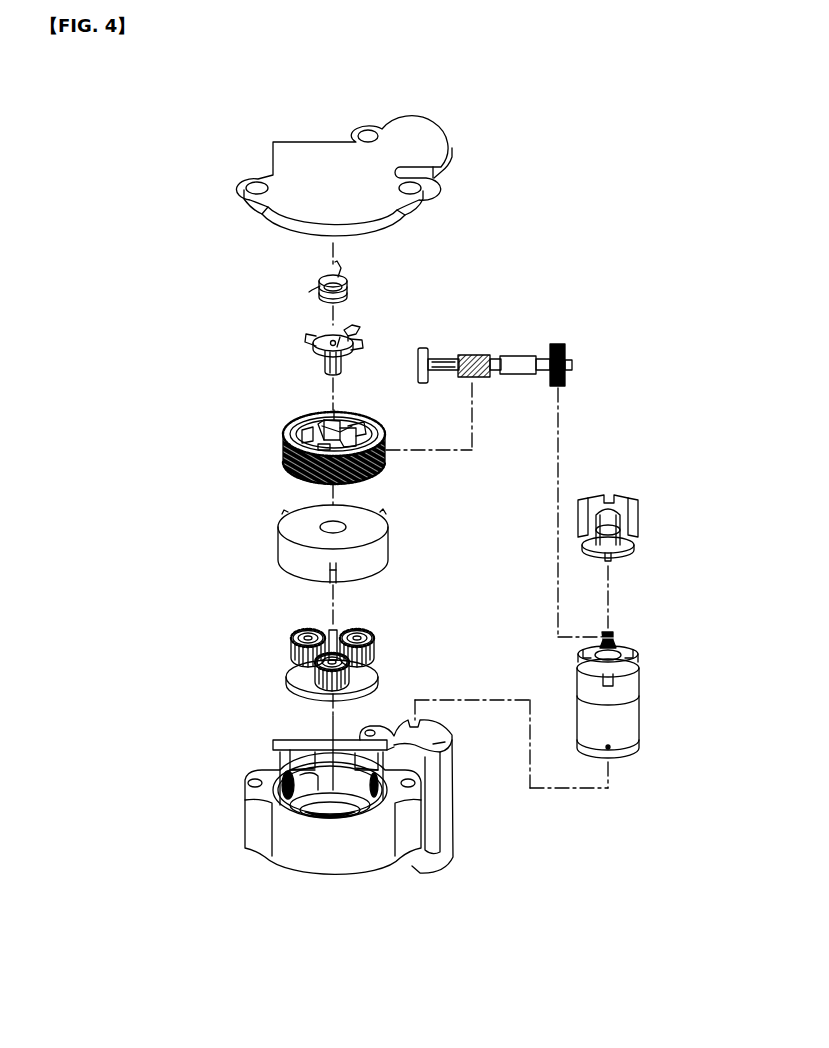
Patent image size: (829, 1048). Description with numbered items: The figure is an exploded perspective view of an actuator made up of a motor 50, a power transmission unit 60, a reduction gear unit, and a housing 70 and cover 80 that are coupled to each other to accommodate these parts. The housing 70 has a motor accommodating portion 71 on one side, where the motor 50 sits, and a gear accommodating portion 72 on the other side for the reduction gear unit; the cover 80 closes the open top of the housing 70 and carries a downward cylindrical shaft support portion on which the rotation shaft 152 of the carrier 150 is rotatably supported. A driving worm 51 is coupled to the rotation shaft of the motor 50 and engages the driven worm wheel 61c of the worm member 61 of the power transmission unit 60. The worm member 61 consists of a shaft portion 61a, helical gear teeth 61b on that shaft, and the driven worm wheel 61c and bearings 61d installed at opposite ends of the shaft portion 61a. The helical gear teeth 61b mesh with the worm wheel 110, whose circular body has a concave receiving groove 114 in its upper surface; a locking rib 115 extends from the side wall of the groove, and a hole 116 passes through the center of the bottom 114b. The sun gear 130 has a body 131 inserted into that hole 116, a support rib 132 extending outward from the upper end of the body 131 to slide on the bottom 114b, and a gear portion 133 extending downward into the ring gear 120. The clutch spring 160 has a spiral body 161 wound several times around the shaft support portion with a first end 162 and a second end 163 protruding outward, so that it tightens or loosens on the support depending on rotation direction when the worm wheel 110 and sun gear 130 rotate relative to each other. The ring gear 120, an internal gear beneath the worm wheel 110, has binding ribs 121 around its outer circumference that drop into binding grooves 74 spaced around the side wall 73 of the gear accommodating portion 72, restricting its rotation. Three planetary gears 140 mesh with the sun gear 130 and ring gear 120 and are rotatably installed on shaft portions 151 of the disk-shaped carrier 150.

The cover 80 is at (470, 142).
The clutch spring 160 is at (303, 285).
The body 161 is at (348, 290).
The first end 162 is at (316, 290).
The second end 163 is at (343, 267).
The sun gear 130 is at (324, 348).
The body 131 is at (356, 344).
The support rib 132 is at (356, 330).
The gear portion 133 is at (322, 362).
The worm wheel 110 is at (328, 447).
The receiving groove 114 is at (292, 443).
The bottom 114b is at (348, 420).
The locking rib 115 is at (380, 455).
The hole 116 is at (372, 478).
The ring gear 120 is at (315, 556).
The binding ribs 121 is at (340, 573).
The planetary gears 140 is at (285, 646).
The carrier 150 is at (330, 644).
The shaft portions 151 is at (312, 628).
The rotation shaft 152 is at (365, 630).
The housing 70 is at (348, 789).
The motor accommodating portion 71 is at (445, 740).
The gear accommodating portion 72 is at (292, 750).
The side wall 73 is at (323, 760).
The binding grooves 74 is at (282, 762).
The power transmission unit 60 is at (526, 426).
The worm member 61 is at (516, 364).
The shaft portion 61a is at (538, 360).
The helical gear teeth 61b is at (483, 378).
The driven worm wheel 61c is at (566, 384).
The bearings 61d is at (423, 384).
The motor 50 is at (625, 687).
The driving worm 51 is at (614, 640).